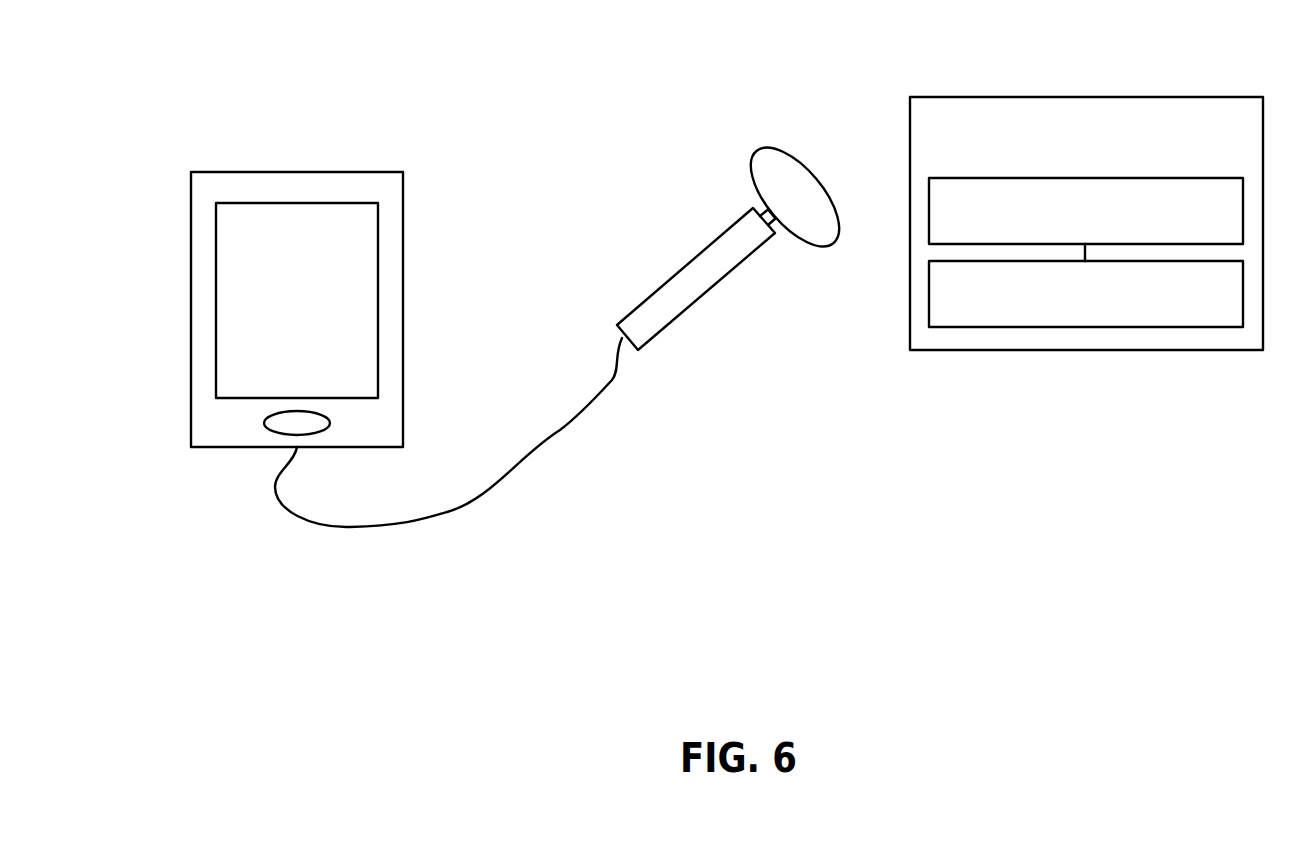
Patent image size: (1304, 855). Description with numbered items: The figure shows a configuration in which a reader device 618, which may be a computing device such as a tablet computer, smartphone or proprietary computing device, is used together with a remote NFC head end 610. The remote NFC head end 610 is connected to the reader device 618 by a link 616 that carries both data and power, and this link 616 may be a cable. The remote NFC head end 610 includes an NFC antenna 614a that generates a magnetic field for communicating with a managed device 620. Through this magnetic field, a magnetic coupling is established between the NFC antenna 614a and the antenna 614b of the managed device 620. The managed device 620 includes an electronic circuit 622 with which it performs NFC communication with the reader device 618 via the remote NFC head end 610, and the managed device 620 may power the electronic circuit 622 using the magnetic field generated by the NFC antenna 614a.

The remote NFC head end 610 is at (663, 282).
The NFC antenna 614a is at (756, 152).
The antenna 614b is at (1086, 294).
The link 616 is at (447, 512).
The reader device 618 is at (297, 293).
The managed device 620 is at (1086, 223).
The electronic circuit 622 is at (1086, 211).